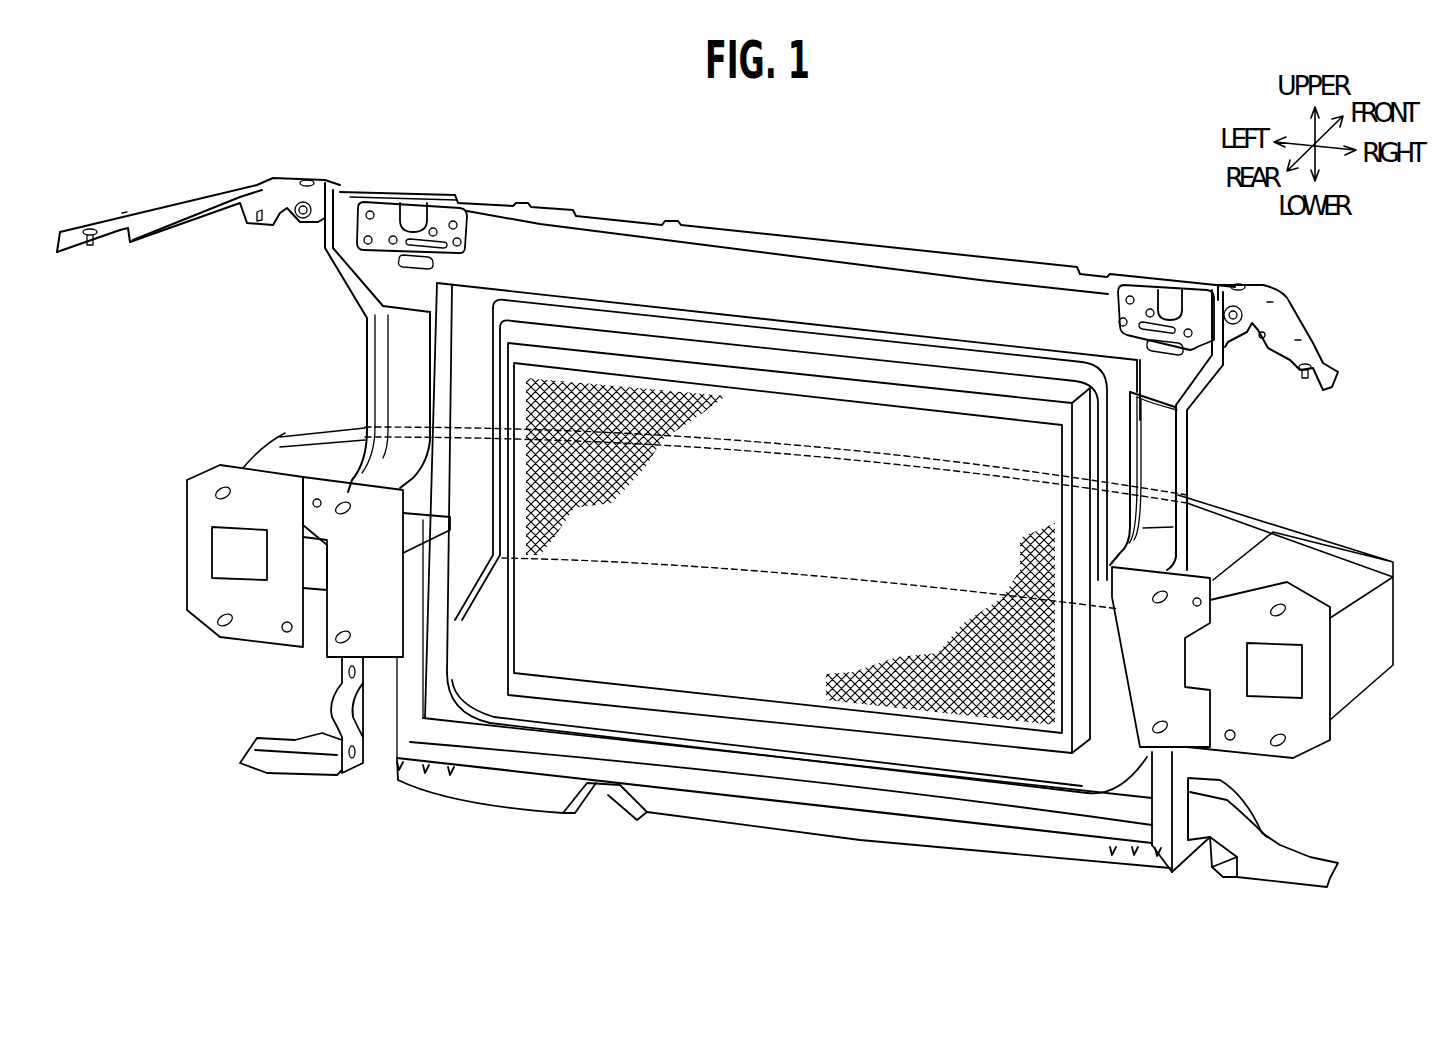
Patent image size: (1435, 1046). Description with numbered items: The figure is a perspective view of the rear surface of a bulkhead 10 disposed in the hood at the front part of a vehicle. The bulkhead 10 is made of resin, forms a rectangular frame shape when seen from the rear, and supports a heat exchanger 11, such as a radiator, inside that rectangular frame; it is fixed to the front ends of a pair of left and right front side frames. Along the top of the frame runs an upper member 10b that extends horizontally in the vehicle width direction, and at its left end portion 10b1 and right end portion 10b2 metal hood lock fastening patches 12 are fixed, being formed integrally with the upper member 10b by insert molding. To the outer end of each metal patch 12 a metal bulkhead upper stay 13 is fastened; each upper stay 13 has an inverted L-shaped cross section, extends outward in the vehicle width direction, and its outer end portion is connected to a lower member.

The bulkhead 10 is at (818, 285).
The upper member 10b is at (543, 260).
The left end portion 10b1 is at (417, 210).
The right end portion 10b2 is at (1173, 297).
The heat exchanger 11 is at (757, 412).
The metal hood lock fastening patch 12 is at (392, 212).
The bulkhead upper stay 13 is at (185, 203).